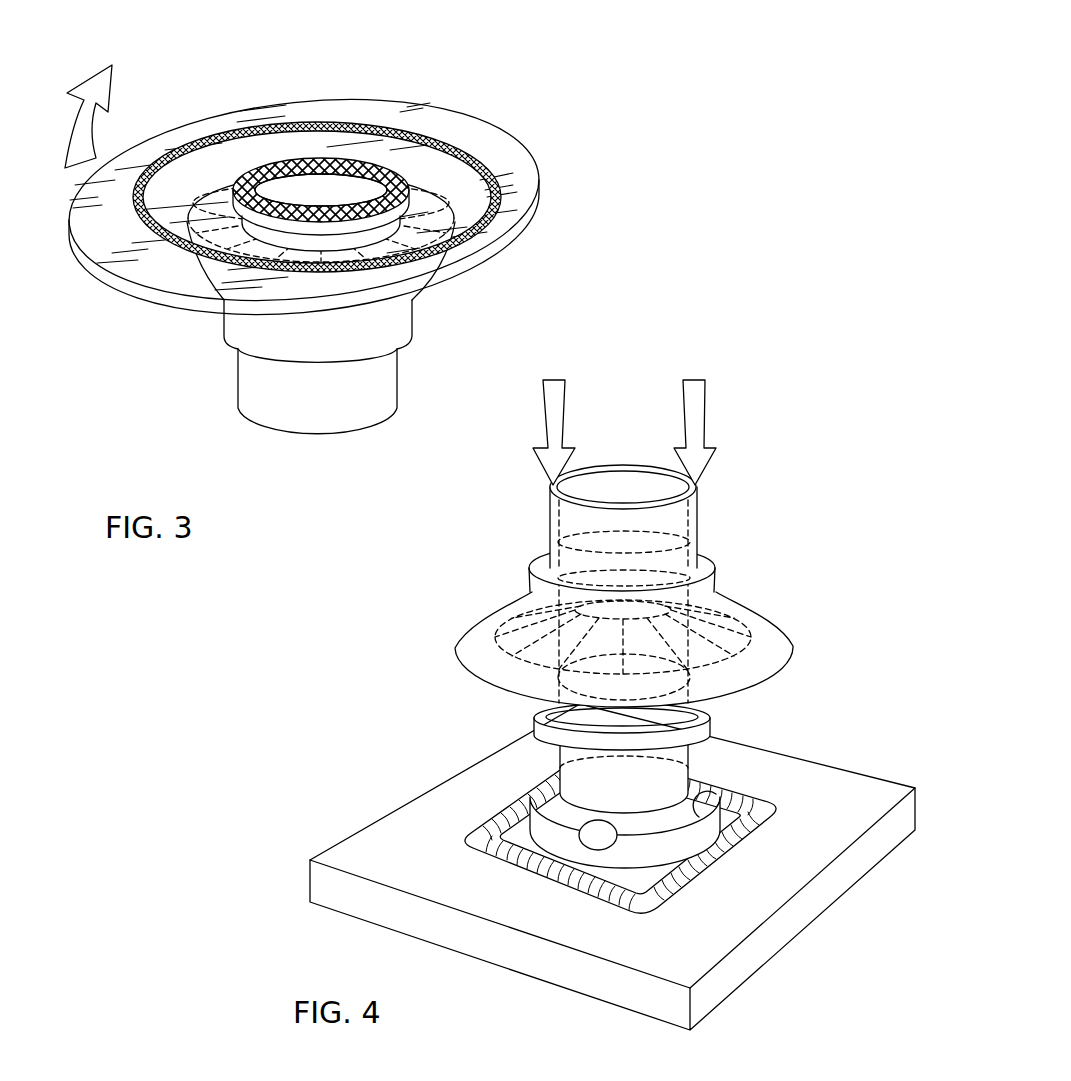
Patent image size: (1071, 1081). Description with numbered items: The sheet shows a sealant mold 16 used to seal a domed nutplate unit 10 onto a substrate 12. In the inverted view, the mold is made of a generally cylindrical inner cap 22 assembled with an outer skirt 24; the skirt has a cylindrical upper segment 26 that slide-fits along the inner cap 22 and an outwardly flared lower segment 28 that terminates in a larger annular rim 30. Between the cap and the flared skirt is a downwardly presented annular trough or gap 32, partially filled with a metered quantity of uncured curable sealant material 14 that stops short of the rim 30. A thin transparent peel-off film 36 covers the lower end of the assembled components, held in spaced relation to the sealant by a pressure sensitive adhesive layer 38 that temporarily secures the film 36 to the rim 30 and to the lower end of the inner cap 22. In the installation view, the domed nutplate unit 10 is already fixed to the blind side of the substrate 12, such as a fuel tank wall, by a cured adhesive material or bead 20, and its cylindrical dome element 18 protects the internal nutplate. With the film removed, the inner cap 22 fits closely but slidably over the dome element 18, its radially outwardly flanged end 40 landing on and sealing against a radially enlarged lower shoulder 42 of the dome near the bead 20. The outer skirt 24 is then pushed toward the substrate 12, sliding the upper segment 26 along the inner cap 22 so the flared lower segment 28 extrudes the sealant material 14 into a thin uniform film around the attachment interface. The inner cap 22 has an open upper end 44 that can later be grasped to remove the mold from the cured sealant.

In FIG. 4, the domed nutplate unit 10 is at (732, 762).
In FIG. 4, the substrate 12 is at (363, 838).
In FIG. 3, the curable sealant material 14 is at (438, 208).
In FIG. 4, the curable sealant material 14 is at (737, 630).
In FIG. 3, the sealant mold 16 is at (208, 400).
In FIG. 4, the sealant mold 16 is at (737, 557).
In FIG. 4, the dome element 18 is at (565, 758).
In FIG. 4, the adhesive material or bead 20 is at (705, 872).
In FIG. 3, the inner cap 22 is at (378, 403).
In FIG. 4, the inner cap 22 is at (680, 523).
In FIG. 3, the outer skirt 24 is at (197, 345).
In FIG. 4, the outer skirt 24 is at (492, 584).
In FIG. 3, the upper segment 26 is at (323, 352).
In FIG. 4, the upper segment 26 is at (710, 583).
In FIG. 3, the flared lower segment 28 is at (422, 157).
In FIG. 4, the flared lower segment 28 is at (778, 658).
In FIG. 3, the rim 30 is at (482, 165).
In FIG. 3, the annular trough or gap 32 is at (208, 162).
In FIG. 3, the peel-off film 36 is at (521, 203).
In FIG. 3, the pressure sensitive adhesive layer 38 is at (282, 160).
In FIG. 4, the flanged end 40 is at (705, 740).
In FIG. 4, the lower shoulder 42 is at (550, 807).
In FIG. 4, the open upper end 44 is at (596, 463).